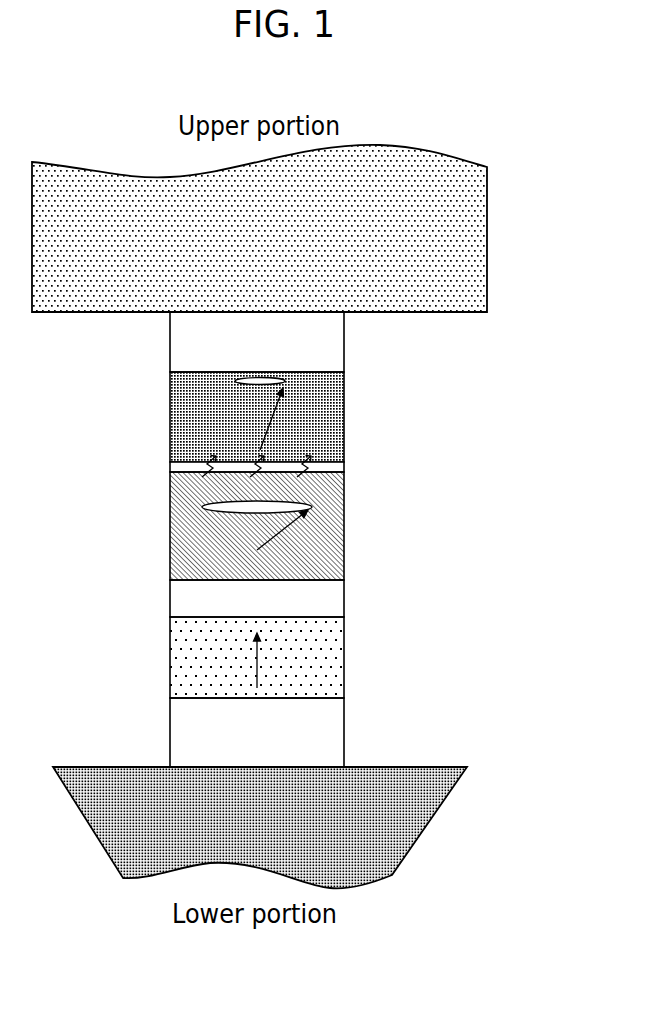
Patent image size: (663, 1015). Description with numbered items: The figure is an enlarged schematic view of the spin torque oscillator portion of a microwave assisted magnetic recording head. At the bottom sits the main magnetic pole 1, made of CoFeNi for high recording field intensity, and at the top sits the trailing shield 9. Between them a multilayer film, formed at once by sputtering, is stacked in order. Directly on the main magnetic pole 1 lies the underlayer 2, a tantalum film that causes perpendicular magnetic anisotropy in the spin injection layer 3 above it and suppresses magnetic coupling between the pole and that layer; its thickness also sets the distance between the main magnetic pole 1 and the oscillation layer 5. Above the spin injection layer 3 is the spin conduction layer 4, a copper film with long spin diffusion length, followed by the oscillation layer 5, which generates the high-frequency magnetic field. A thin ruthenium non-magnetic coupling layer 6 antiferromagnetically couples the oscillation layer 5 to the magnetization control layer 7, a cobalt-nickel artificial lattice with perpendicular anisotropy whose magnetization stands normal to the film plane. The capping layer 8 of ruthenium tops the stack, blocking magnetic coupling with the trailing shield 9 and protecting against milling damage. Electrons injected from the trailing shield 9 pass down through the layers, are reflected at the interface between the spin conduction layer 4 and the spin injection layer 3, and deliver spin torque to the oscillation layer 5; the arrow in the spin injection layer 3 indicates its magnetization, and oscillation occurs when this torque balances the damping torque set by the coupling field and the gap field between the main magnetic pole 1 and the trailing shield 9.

The main magnetic pole 1 is at (467, 777).
The underlayer 2 is at (345, 735).
The spin injection layer 3 is at (345, 660).
The spin conduction layer 4 is at (345, 597).
The oscillation layer 5 is at (345, 527).
The non-magnetic coupling layer 6 is at (345, 466).
The magnetization control layer 7 is at (345, 417).
The capping layer 8 is at (170, 352).
The trailing shield 9 is at (487, 233).